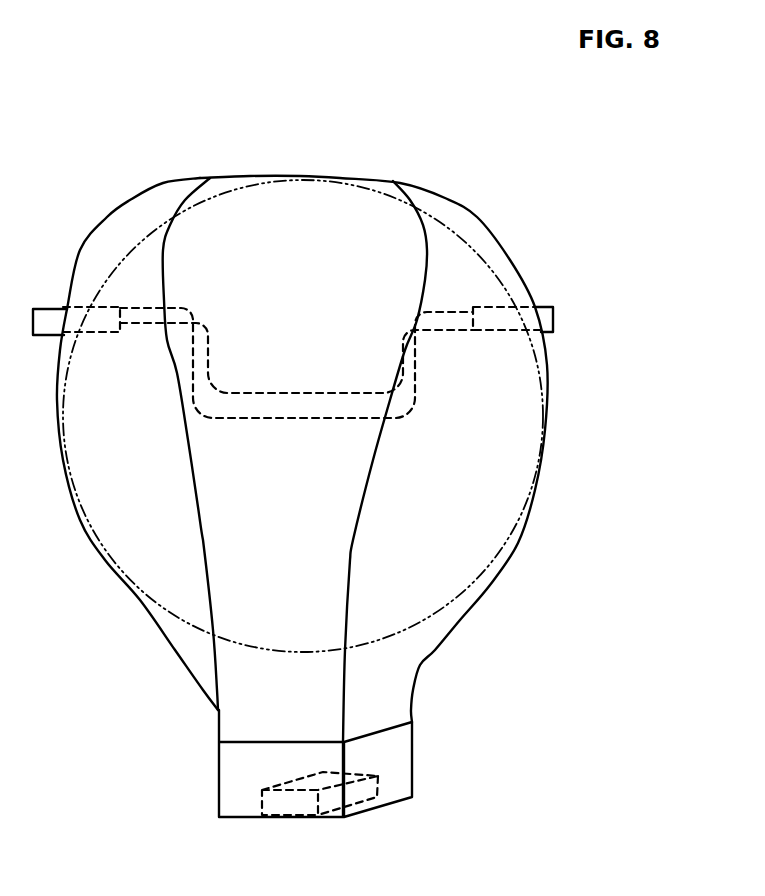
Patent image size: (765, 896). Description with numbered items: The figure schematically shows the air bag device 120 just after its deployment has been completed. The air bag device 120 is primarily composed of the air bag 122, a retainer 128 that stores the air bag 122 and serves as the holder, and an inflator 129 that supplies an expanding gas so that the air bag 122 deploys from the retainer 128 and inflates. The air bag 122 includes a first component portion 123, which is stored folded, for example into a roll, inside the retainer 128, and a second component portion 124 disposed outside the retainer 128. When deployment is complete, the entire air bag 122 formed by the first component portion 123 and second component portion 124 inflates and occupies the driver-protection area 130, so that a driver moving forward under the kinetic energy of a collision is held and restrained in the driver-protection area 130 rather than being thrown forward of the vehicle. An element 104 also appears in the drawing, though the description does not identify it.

The air bag device 120 is at (370, 498).
The air bag 122 is at (517, 546).
The first component portion 123 is at (460, 618).
The second component portion 124 is at (318, 202).
The strap 104 is at (458, 310).
The retainer 128 is at (414, 757).
The inflator 129 is at (363, 800).
The driver-protection area 130 is at (138, 608).